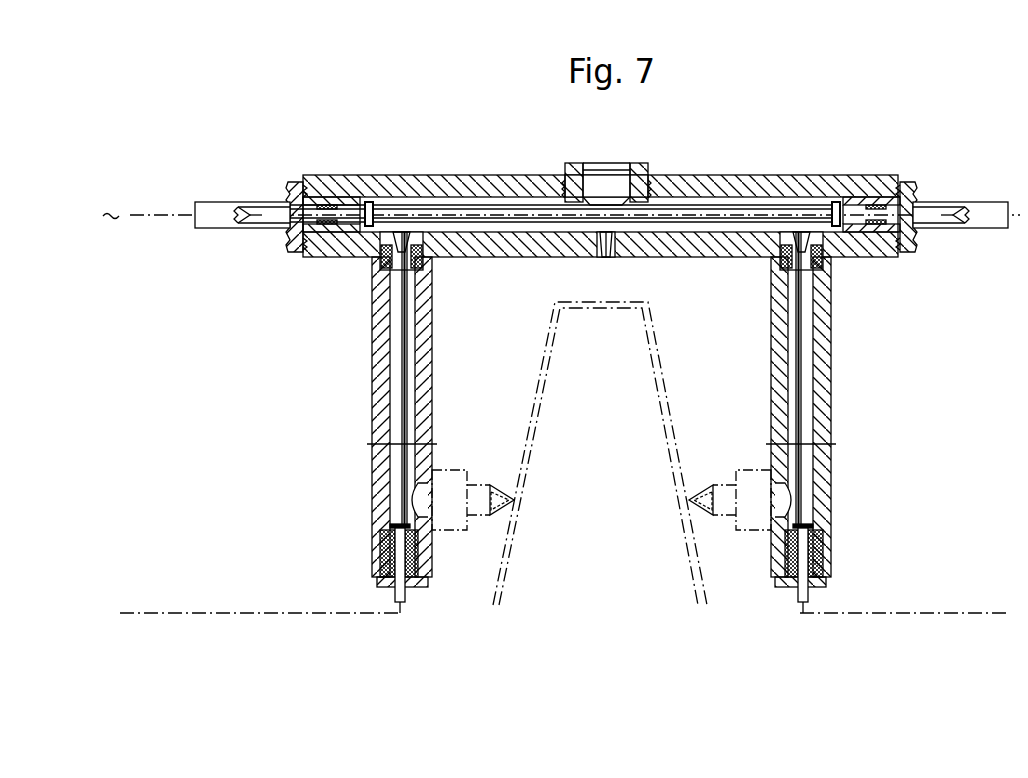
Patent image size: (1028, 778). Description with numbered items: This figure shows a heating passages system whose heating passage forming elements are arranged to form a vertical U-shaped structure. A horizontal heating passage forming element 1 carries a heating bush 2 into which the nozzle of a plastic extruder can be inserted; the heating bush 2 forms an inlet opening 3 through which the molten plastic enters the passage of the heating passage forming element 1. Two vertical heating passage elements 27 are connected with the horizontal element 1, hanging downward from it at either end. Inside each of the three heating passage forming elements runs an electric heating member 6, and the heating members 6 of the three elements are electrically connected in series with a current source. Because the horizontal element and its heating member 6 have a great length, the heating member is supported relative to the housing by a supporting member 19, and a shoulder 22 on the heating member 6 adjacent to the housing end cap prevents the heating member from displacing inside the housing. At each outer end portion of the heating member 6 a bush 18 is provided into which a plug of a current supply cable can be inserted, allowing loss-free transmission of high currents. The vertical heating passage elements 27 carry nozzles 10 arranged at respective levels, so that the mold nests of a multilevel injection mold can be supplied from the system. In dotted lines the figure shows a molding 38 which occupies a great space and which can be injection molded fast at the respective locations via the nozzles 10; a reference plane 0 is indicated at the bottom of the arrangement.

The reference plane 0 is at (556, 609).
The heating passage forming element 1 is at (714, 166).
The heating bush 2 is at (646, 166).
The inlet opening 3 is at (608, 192).
The heating member 6 is at (744, 212).
The nozzle 10 is at (452, 523).
The bush 18 is at (208, 208).
The supporting member 19 is at (602, 258).
The shoulder 22 is at (836, 202).
The vertical heating passage element 27 is at (368, 378).
The molding 38 is at (658, 372).